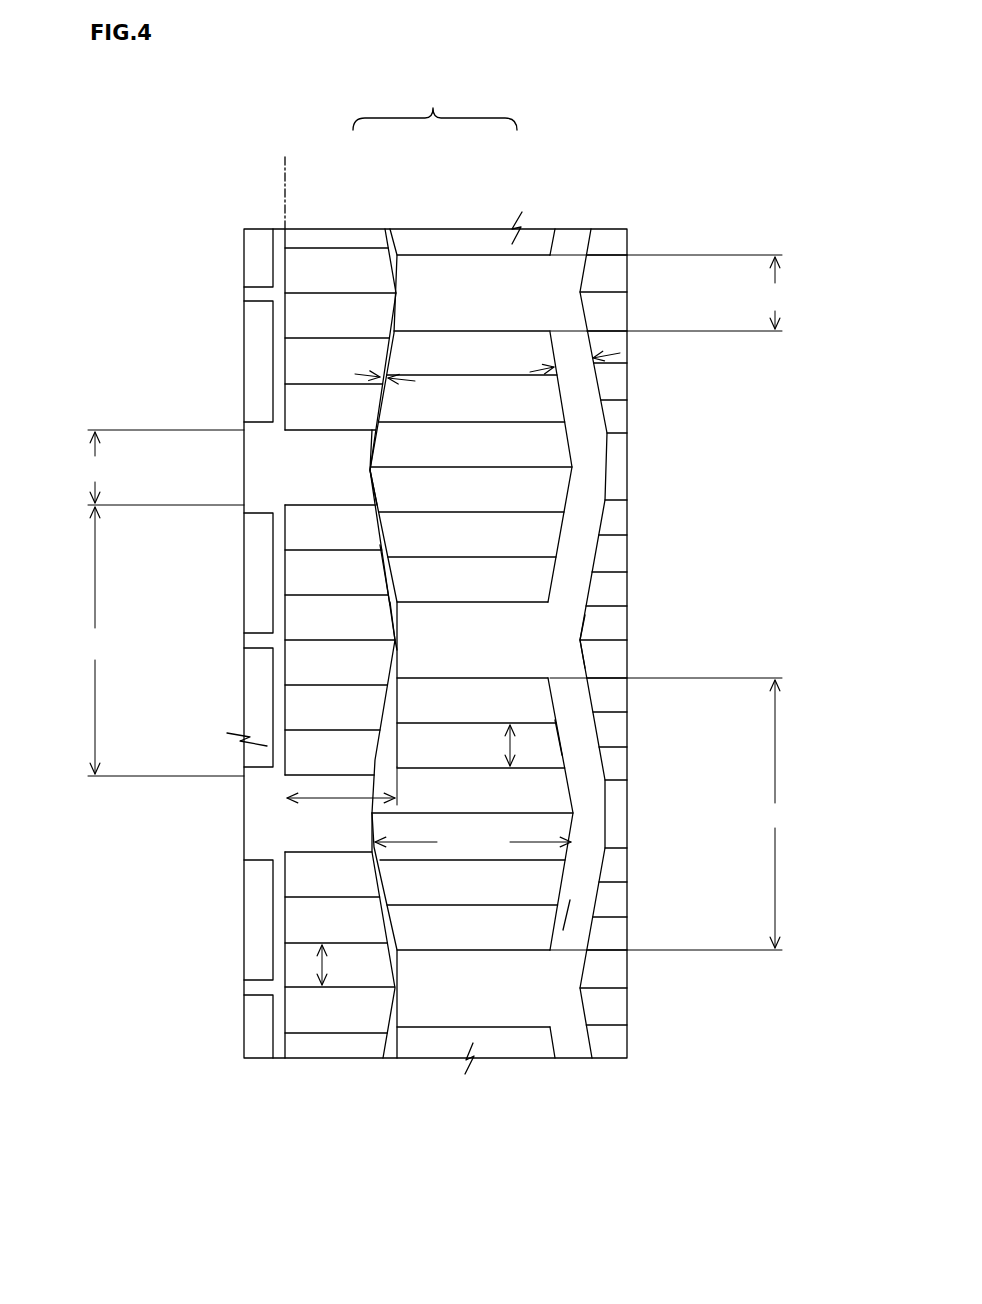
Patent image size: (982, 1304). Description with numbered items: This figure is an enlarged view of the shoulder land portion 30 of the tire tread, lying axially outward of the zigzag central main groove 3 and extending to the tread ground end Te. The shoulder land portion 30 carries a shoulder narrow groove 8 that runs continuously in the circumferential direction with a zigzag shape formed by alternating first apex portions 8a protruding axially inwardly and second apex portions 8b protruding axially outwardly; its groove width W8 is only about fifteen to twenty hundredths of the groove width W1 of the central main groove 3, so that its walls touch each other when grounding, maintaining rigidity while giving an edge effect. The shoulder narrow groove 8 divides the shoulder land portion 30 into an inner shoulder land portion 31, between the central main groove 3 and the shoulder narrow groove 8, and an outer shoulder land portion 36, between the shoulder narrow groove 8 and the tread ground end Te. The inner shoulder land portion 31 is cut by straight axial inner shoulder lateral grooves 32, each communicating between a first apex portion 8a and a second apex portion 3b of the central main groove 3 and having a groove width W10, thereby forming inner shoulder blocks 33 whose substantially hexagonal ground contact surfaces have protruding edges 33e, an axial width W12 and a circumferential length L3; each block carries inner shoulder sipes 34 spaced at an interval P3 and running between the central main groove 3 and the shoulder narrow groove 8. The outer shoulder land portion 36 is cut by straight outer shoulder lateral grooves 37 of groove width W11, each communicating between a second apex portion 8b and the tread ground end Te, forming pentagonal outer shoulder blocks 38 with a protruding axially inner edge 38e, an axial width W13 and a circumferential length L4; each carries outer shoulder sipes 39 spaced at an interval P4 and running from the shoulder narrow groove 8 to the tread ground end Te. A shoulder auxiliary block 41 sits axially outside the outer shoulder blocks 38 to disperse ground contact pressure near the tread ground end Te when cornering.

The central main groove 3 is at (570, 244).
The second apex portion 3b is at (568, 638).
The shoulder narrow groove 8 is at (392, 332).
The first apex portion 8a is at (402, 634).
The second apex portion 8b is at (366, 467).
The shoulder land portion 30 is at (435, 106).
The inner shoulder land portion 31 is at (477, 399).
The inner shoulder lateral groove 32 is at (500, 297).
The inner shoulder block 33 is at (490, 444).
The edge 33e is at (563, 753).
The inner shoulder sipe 34 is at (478, 478).
The outer shoulder land portion 36 is at (342, 284).
The outer shoulder lateral groove 37 is at (323, 474).
The outer shoulder block 38 is at (328, 318).
The axially inner edge 38e is at (387, 580).
The outer shoulder sipe 39 is at (333, 643).
The shoulder auxiliary block 41 is at (262, 350).
The tread ground end Te is at (288, 179).
The groove width W1 is at (580, 367).
The groove width W8 is at (387, 360).
The groove width W10 is at (674, 293).
The groove width W11 is at (157, 466).
The axial width W12 is at (473, 843).
The axial width W13 is at (289, 797).
The circumferential length L3 is at (668, 814).
The circumferential length L4 is at (162, 640).
The interval P3 is at (491, 745).
The interval P4 is at (304, 965).